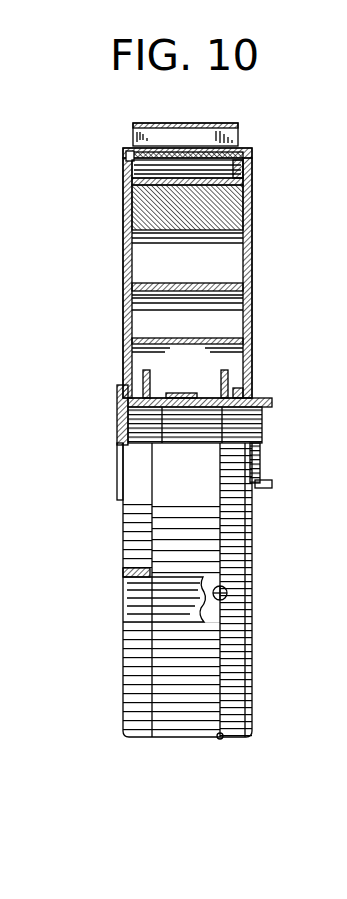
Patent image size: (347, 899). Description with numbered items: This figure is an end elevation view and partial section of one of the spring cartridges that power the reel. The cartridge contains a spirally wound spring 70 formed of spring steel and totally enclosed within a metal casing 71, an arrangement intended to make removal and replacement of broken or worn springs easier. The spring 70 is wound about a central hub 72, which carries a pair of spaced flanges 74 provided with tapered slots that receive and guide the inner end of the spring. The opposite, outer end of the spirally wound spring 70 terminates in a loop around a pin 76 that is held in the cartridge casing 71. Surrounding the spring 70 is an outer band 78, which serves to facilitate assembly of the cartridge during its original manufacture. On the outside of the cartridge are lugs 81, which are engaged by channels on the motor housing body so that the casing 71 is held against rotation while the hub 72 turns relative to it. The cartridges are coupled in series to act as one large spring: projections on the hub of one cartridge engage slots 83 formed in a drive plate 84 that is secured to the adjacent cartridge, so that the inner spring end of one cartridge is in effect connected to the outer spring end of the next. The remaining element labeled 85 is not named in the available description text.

The spirally wound spring 70 is at (145, 284).
The metal casing 71 is at (252, 284).
The hub 72 is at (208, 397).
The flanges 74 is at (147, 372).
The pin 76 is at (248, 174).
The outer band 78 is at (133, 153).
The lugs 81 is at (205, 125).
The slots 83 is at (117, 404).
The drive plate 84 is at (117, 461).
The mounting plate 85 is at (270, 397).